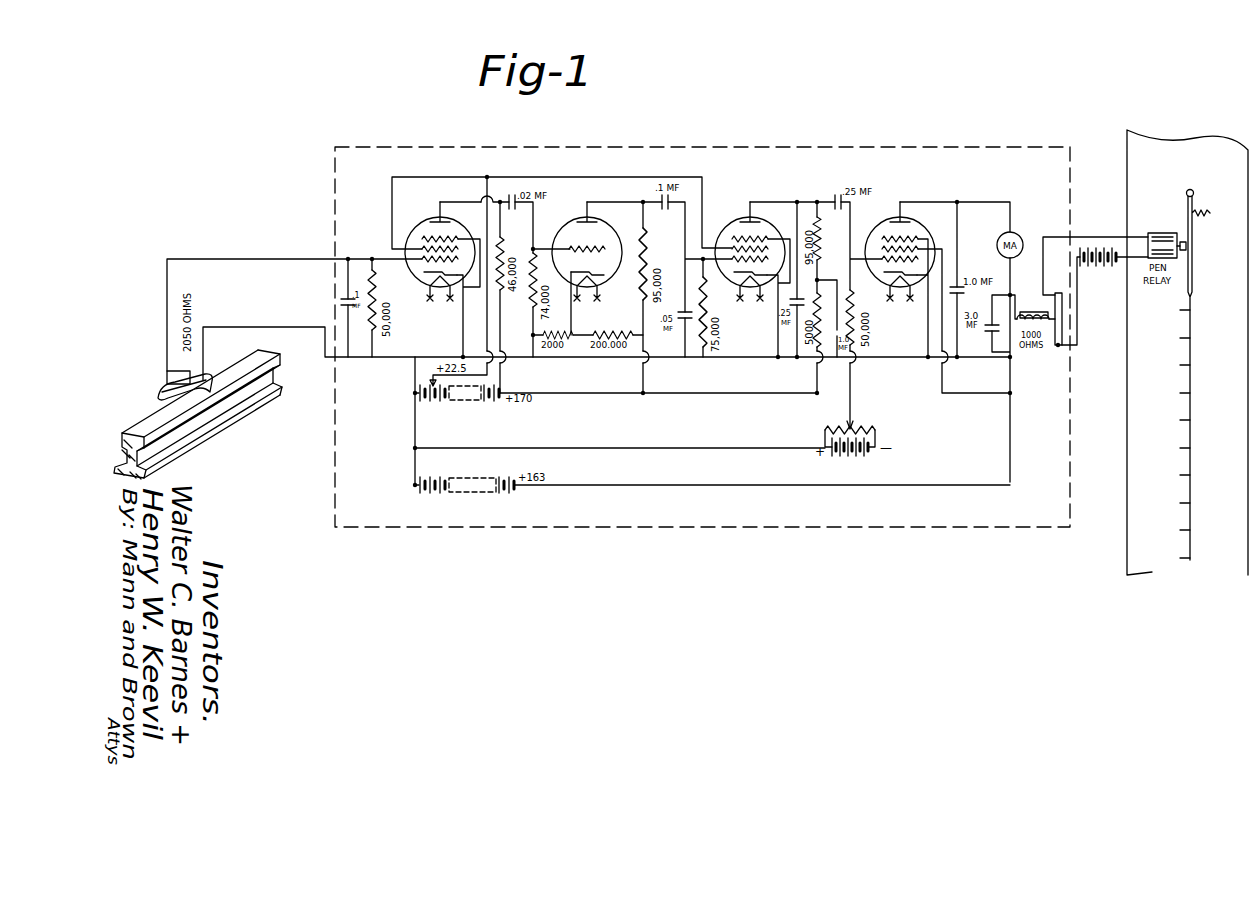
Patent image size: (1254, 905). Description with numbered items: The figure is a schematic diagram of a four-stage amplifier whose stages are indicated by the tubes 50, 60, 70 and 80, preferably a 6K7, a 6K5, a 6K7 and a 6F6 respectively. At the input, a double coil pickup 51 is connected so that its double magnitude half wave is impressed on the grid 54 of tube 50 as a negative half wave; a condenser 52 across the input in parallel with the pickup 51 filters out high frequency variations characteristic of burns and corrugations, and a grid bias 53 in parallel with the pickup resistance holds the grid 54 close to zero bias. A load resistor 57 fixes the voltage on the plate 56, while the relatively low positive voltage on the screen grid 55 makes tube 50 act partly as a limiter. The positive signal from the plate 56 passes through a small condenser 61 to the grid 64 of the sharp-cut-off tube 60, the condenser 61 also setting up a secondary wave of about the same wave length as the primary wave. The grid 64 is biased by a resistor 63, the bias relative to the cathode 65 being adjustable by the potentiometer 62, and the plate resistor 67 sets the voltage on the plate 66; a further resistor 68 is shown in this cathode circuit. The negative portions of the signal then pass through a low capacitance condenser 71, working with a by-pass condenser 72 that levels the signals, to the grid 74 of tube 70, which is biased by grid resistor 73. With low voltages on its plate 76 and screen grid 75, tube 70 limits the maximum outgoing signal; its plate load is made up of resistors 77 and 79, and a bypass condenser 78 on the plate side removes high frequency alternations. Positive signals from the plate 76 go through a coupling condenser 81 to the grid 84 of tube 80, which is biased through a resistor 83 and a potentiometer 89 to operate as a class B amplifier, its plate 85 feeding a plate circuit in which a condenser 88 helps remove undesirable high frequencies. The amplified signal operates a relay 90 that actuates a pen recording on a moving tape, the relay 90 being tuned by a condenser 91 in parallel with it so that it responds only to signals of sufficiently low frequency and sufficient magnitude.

The tube 50 is at (442, 279).
The pickup 51 is at (160, 391).
The condenser 52 is at (340, 305).
The grid bias 53 is at (378, 276).
The grid 54 is at (453, 259).
The screen grid 55 is at (453, 249).
The plate 56 is at (435, 225).
The load resistor 57 is at (503, 288).
The tube 60 is at (584, 251).
The condenser 61 is at (512, 209).
The potentiometer 62 is at (558, 332).
The resistor 63 is at (530, 308).
The grid 64 is at (592, 247).
The cathode 65 is at (583, 271).
The plate 66 is at (590, 223).
The plate resistor 67 is at (640, 288).
The resistor 68 is at (622, 333).
The tube 70 is at (749, 279).
The condenser 71 is at (666, 208).
The by-pass condenser 72 is at (677, 313).
The grid resistor 73 is at (706, 290).
The grid 74 is at (763, 260).
The screen grid 75 is at (763, 249).
The plate 76 is at (752, 224).
The resistor 77 is at (820, 240).
The bypass condenser 78 is at (795, 300).
The resistor 79 is at (818, 301).
The tube 80 is at (898, 251).
The coupling condenser 81 is at (834, 197).
The resistor 83 is at (853, 295).
The grid 84 is at (885, 249).
The plate 85 is at (893, 224).
The condenser 88 is at (960, 292).
The potentiometer 89 is at (860, 428).
The relay 90 is at (1016, 323).
The condenser 91 is at (1000, 333).